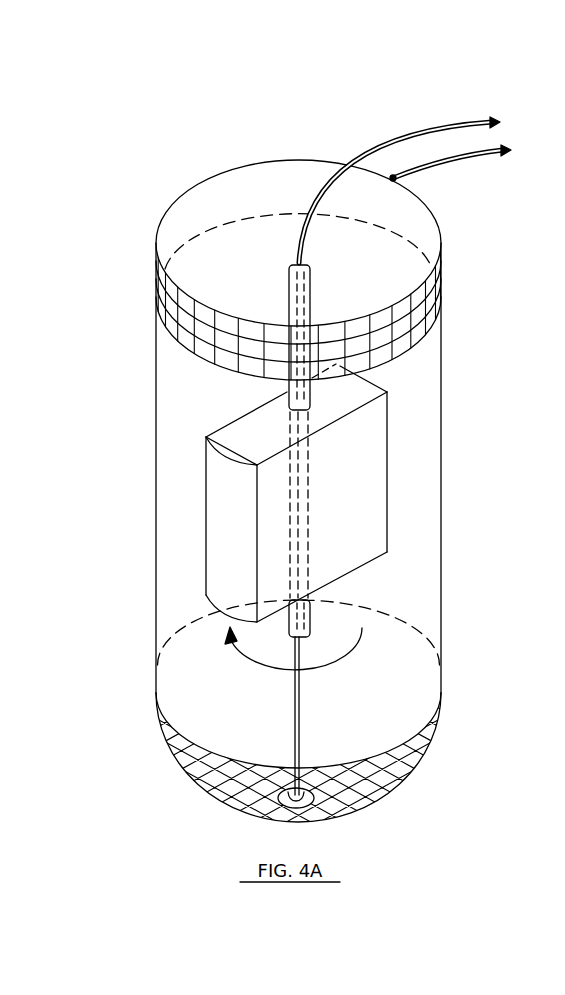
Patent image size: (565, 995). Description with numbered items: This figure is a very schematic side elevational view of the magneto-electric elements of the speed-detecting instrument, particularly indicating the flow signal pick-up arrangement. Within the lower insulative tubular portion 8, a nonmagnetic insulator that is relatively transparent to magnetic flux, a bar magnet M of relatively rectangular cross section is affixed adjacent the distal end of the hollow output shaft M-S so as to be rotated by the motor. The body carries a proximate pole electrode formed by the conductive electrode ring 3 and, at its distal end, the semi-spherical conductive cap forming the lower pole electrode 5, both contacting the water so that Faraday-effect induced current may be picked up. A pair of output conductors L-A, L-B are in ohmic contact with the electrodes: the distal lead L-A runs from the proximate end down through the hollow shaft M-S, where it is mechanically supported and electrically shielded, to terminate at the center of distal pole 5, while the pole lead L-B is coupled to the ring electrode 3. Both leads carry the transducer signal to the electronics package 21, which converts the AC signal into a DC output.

The upper pole electrode 3 is at (432, 307).
The lower pole electrode 5 is at (192, 768).
The lower insulative tubular portion 8 is at (153, 478).
The electronics package 21 is at (524, 134).
The bar magnet M is at (344, 511).
The output shaft M-S is at (289, 287).
The distal lead L-A is at (413, 133).
The pole lead L-B is at (443, 162).